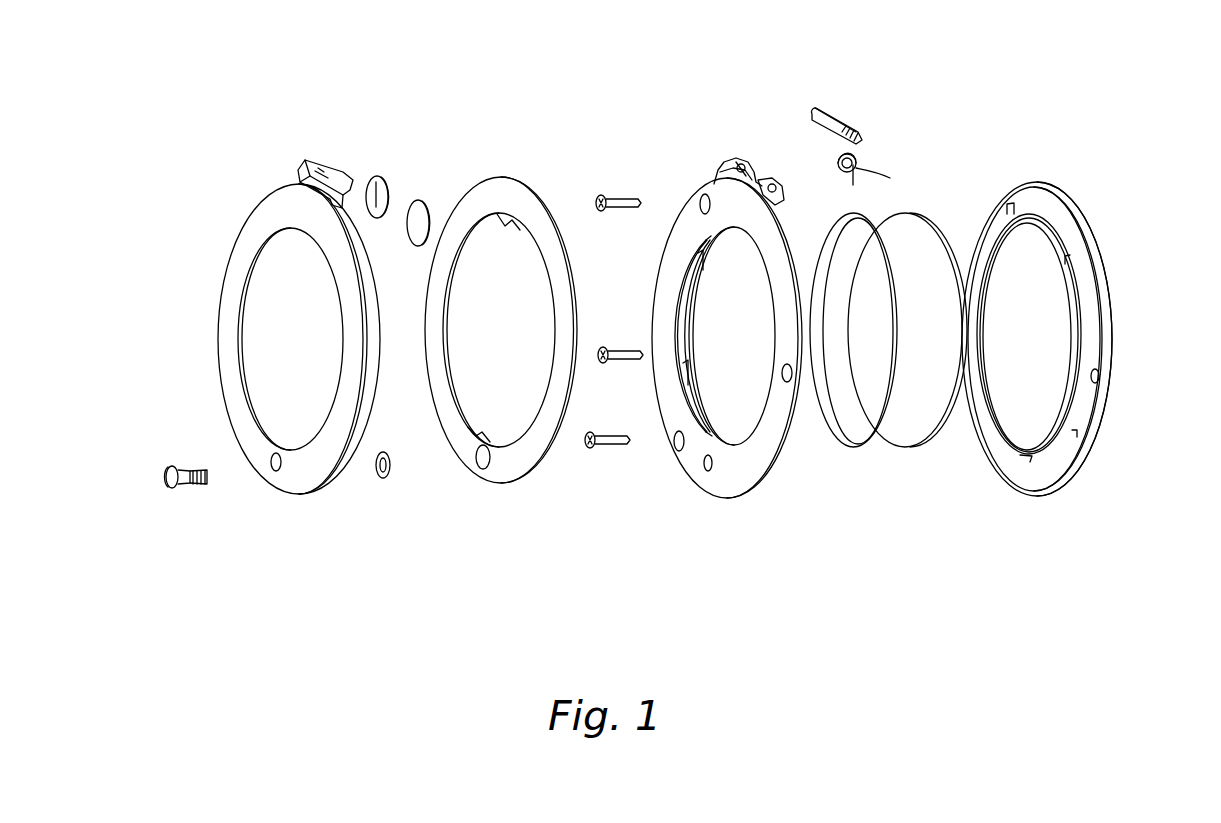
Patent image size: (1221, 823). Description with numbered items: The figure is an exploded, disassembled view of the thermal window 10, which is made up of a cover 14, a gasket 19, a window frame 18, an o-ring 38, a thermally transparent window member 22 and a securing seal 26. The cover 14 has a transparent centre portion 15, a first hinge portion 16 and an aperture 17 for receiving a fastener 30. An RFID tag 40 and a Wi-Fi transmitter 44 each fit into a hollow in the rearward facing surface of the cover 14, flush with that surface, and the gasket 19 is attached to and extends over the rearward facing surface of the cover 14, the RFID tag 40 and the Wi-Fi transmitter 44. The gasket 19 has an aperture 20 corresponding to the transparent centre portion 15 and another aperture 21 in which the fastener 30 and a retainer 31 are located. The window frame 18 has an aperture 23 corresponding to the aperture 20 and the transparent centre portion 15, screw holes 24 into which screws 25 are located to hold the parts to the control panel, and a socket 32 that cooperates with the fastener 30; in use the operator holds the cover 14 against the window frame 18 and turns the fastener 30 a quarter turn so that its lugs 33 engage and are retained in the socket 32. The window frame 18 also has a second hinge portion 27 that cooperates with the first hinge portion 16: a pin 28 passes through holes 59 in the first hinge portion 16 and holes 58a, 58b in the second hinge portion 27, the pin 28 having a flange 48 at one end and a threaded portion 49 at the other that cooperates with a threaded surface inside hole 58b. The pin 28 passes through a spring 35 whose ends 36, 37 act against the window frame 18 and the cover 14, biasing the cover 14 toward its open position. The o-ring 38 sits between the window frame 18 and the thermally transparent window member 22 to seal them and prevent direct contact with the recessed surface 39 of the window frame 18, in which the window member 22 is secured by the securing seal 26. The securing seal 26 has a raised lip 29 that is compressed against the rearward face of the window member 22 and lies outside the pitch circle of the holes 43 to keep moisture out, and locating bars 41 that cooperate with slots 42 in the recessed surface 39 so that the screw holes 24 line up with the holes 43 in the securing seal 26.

The thermal window 10 is at (890, 520).
The cover 14 is at (232, 255).
The transparent centre portion 15 is at (262, 320).
The first hinge portion 16 is at (298, 172).
The aperture 17 is at (274, 470).
The window frame 18 is at (776, 468).
The gasket 19 is at (537, 446).
The aperture 20 is at (503, 248).
The aperture 21 is at (484, 468).
The thermally transparent window member 22 is at (915, 418).
The aperture 23 is at (705, 298).
The screw holes 24 is at (701, 200).
The screws 25 is at (608, 445).
The securing seal 26 is at (1065, 215).
The second hinge portion 27 is at (720, 170).
The pin 28 is at (838, 120).
The raised lip 29 is at (1105, 302).
The fastener 30 is at (173, 488).
The retainer 31 is at (380, 478).
The socket 32 is at (709, 472).
The lugs 33 is at (205, 485).
The spring 35 is at (858, 158).
The end 36 is at (884, 178).
The end 37 is at (848, 176).
The o-ring 38 is at (840, 447).
The recessed surface 39 is at (692, 385).
The RFID tag 40 is at (378, 190).
The locating bars 41 is at (1074, 405).
The slots 42 is at (697, 350).
The holes 43 is at (1100, 376).
The Wi-Fi transmitter 44 is at (418, 218).
The flange 48 is at (820, 112).
The threaded portion 49 is at (866, 135).
The hole 58a is at (743, 164).
The hole 58b is at (772, 184).
The holes 59 is at (354, 177).